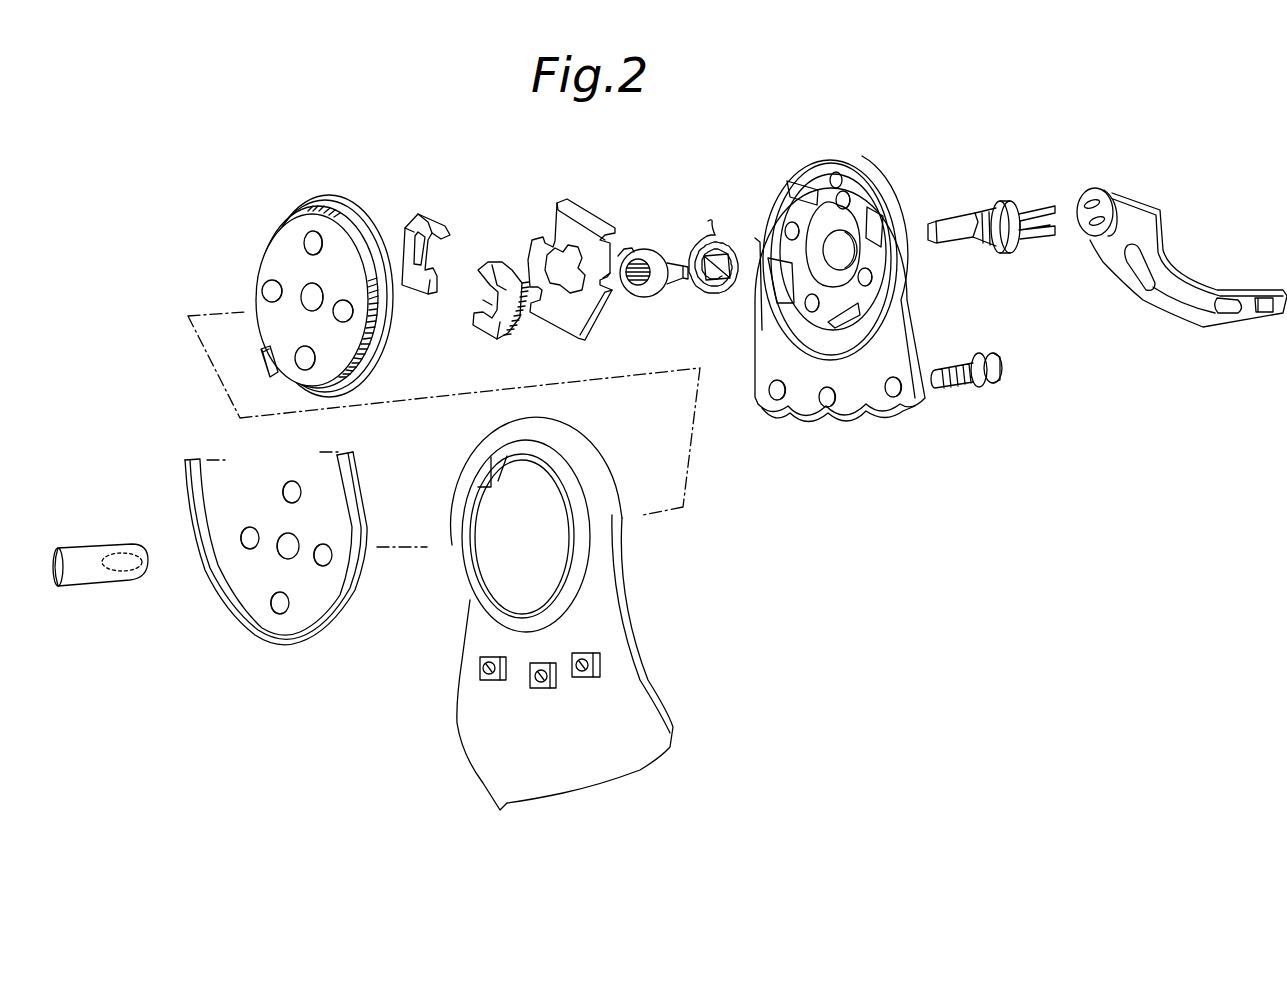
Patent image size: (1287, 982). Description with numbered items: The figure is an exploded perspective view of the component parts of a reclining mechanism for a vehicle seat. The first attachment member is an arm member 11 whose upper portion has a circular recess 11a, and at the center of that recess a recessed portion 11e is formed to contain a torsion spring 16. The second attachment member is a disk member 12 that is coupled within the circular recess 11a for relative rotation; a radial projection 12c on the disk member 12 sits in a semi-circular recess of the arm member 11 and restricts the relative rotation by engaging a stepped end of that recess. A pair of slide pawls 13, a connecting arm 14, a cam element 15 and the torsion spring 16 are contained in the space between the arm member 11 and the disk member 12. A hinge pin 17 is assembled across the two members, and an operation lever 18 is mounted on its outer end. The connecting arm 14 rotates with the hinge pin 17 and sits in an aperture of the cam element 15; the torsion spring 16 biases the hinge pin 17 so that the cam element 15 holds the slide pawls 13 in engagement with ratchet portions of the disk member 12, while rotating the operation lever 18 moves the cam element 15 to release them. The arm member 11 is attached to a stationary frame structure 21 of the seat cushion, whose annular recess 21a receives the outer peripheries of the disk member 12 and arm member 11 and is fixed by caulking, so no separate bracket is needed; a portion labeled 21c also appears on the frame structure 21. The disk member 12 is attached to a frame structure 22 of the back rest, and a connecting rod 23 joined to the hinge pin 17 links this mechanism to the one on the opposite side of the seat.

The arm member 11 is at (879, 176).
The circular recess 11a is at (838, 172).
The recessed portion 11e is at (820, 272).
The disk member 12 is at (283, 238).
The radial projection 12c is at (270, 376).
The slide pawls 13 is at (492, 260).
The connecting arm 14 is at (653, 248).
The cam element 15 is at (550, 322).
The torsion spring 16 is at (703, 296).
The hinge pin 17 is at (1003, 203).
The operation lever 18 is at (1110, 262).
The stationary frame structure 21 is at (600, 460).
The annular recess 21a is at (468, 557).
The slit 21c is at (266, 355).
The frame structure 22 is at (355, 502).
The connecting rod 23 is at (122, 548).